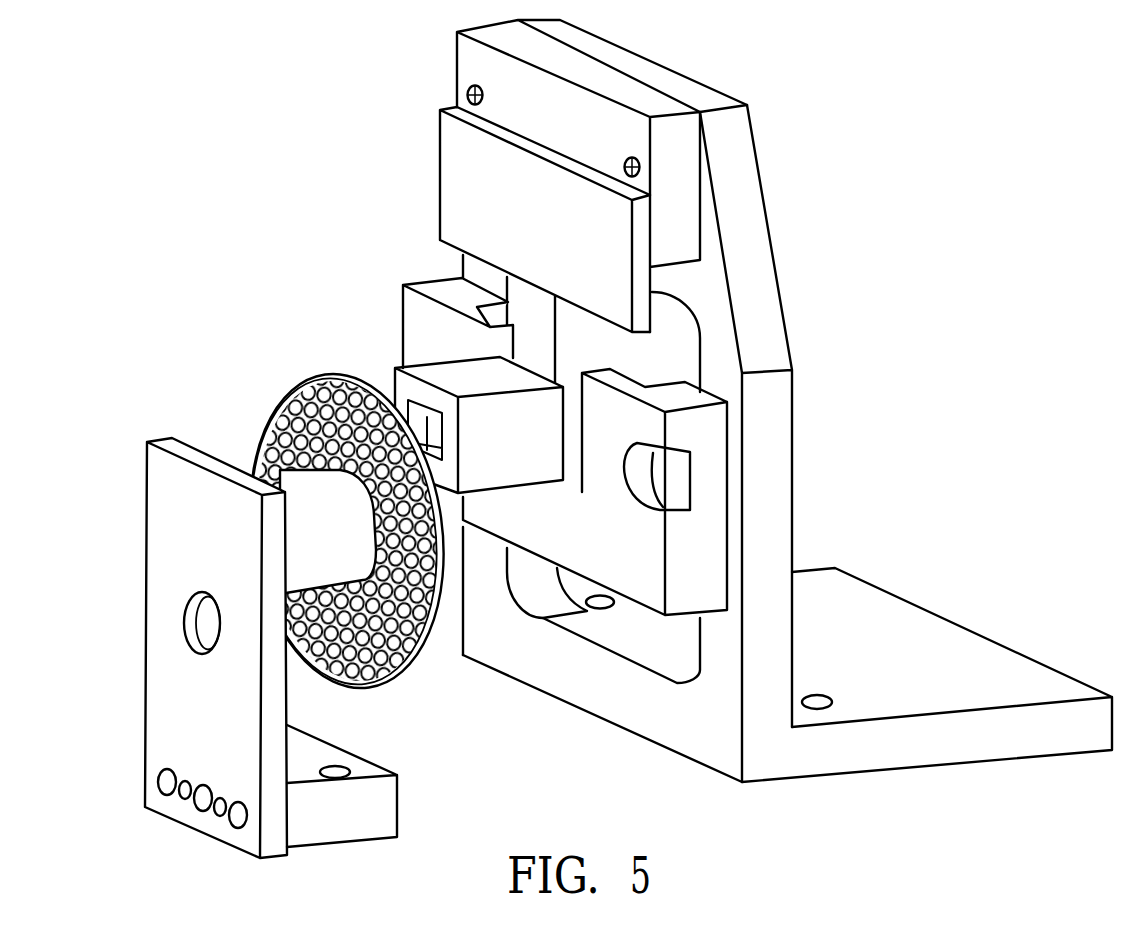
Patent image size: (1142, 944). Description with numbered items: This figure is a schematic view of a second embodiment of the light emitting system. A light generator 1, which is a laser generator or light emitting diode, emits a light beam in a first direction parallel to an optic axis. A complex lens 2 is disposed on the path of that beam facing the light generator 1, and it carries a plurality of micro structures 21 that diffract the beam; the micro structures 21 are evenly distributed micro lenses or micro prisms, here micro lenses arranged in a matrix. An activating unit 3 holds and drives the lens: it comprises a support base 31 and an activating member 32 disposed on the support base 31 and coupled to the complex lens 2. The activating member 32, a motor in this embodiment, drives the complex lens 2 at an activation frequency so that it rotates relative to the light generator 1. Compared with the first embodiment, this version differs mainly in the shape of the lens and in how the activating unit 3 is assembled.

The light generator 1 is at (445, 372).
The complex lens 2 is at (336, 452).
The micro structures 21 is at (290, 390).
The activating unit 3 is at (222, 592).
The support base 31 is at (162, 537).
The activating member 32 is at (312, 483).